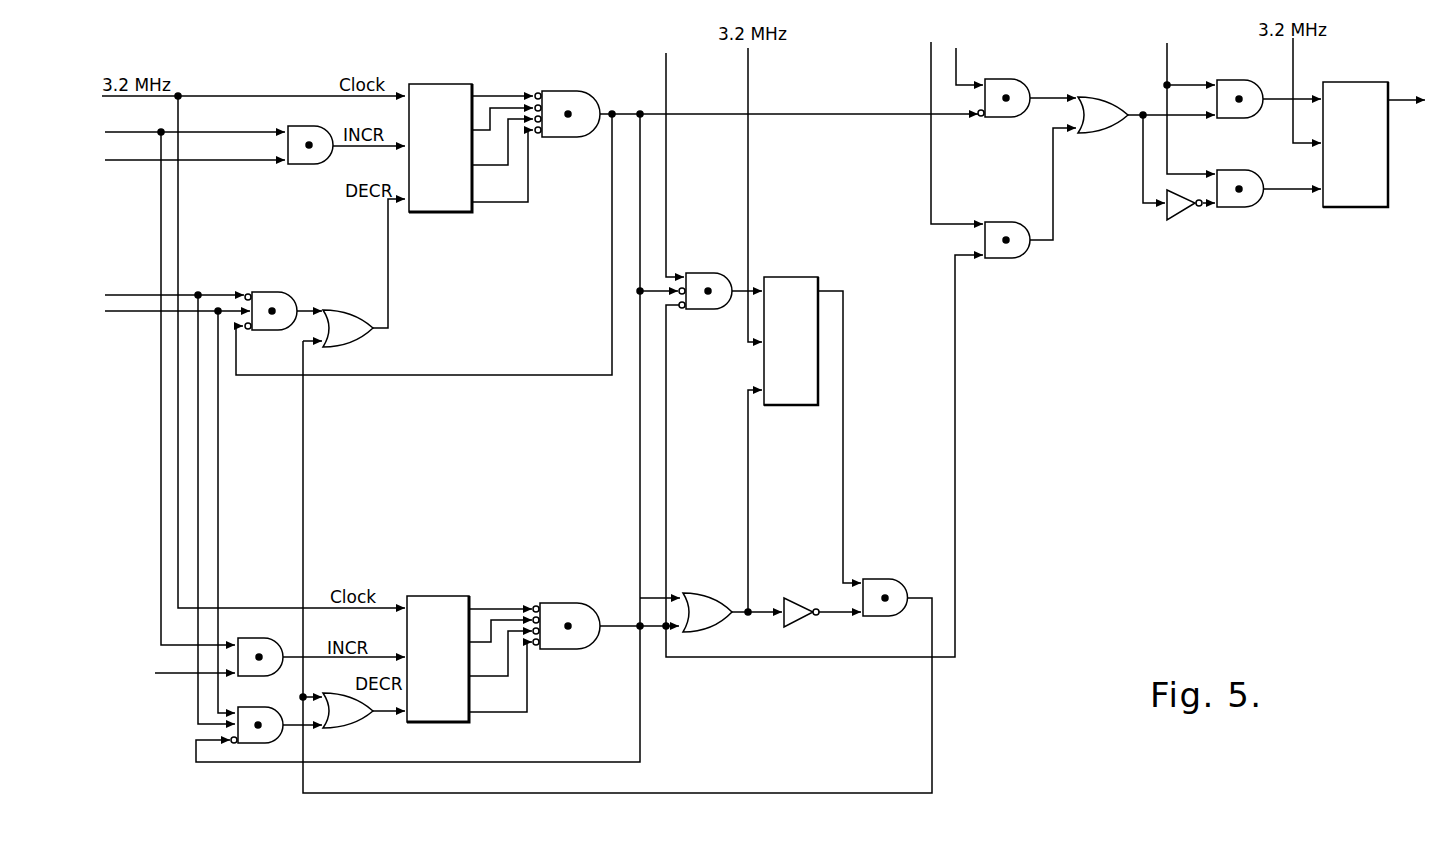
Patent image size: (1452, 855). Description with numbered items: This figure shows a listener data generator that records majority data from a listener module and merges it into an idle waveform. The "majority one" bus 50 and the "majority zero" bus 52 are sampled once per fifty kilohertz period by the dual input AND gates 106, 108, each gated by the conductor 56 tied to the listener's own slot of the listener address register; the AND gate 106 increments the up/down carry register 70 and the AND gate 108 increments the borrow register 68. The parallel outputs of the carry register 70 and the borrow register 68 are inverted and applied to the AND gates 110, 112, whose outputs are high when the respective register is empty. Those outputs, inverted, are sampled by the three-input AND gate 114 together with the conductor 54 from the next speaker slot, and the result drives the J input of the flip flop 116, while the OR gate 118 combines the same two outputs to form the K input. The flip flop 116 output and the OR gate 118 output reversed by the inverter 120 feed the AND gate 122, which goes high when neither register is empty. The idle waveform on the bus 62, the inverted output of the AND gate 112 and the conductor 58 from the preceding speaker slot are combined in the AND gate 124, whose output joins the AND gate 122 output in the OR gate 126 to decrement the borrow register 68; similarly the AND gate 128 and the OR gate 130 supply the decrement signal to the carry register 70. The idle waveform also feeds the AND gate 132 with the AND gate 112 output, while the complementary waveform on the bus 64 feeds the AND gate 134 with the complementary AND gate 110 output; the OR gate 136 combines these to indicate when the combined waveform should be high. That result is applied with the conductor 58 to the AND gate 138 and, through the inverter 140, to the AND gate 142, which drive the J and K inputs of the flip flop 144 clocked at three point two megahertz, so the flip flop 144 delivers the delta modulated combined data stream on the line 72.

The majority one bus 50 is at (132, 159).
The majority zero bus 52 is at (162, 673).
The conductor 54 is at (134, 131).
The conductor 56 is at (668, 73).
The conductor 58 is at (132, 312).
The bus 62 is at (130, 294).
The bus 64 is at (960, 60).
The borrow register 68 is at (470, 598).
The carry register 70 is at (470, 85).
The line 72 is at (1396, 105).
The AND gate 106 is at (334, 118).
The AND gate 108 is at (280, 631).
The AND gate 110 is at (596, 90).
The AND gate 112 is at (596, 643).
The AND gate 114 is at (711, 273).
The flip flop 116 is at (819, 277).
The OR gate 118 is at (722, 596).
The inverter 120 is at (810, 603).
The AND gate 122 is at (910, 591).
The AND gate 124 is at (283, 700).
The OR gate 126 is at (365, 722).
The AND gate 128 is at (296, 293).
The OR gate 130 is at (368, 335).
The AND gate 132 is at (991, 222).
The AND gate 134 is at (1026, 80).
The OR gate 136 is at (1119, 98).
The AND gate 138 is at (1270, 73).
The inverter 140 is at (1181, 217).
The AND gate 142 is at (1262, 200).
The flip flop 144 is at (1389, 82).